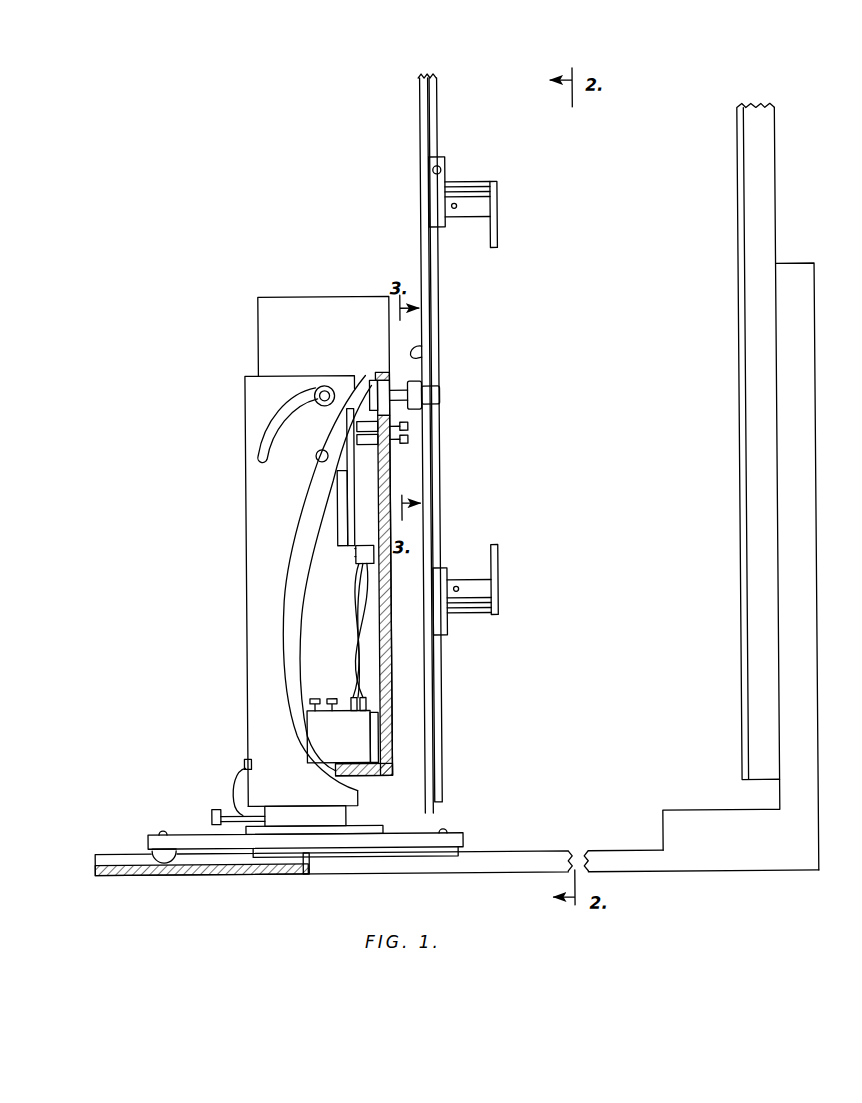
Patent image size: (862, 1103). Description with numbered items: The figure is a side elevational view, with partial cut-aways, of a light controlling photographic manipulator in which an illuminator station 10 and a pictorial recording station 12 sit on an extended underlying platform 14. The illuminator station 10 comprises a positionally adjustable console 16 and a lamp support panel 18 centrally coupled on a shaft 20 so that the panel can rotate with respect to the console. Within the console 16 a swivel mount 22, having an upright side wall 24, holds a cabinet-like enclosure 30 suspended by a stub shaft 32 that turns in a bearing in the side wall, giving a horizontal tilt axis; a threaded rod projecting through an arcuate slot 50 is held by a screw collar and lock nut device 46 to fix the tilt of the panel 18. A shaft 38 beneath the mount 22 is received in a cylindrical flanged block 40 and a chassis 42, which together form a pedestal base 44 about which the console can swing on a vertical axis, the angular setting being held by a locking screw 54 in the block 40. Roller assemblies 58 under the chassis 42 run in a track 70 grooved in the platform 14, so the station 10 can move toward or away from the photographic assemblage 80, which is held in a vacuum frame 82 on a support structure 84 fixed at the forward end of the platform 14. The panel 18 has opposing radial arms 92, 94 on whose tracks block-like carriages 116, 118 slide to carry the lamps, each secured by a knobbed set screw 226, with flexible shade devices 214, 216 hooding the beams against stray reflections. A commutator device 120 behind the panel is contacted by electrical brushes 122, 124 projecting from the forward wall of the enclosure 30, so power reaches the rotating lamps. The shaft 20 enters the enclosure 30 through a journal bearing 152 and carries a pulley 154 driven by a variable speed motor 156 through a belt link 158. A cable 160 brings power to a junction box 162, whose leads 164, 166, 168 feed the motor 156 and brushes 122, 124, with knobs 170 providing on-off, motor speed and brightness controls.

The illuminator station 10 is at (320, 208).
The pictorial recording station 12 is at (726, 376).
The platform 14 is at (547, 853).
The console 16 is at (243, 444).
The lamp support panel 18 is at (458, 300).
The shaft 20 is at (442, 400).
The swivel mount 22 is at (255, 482).
The side wall 24 is at (250, 522).
The enclosure 30 is at (259, 312).
The stub shaft 32 is at (316, 460).
The shaft 38 is at (300, 866).
The cylindrical flanged block 40 is at (345, 814).
The chassis 42 is at (188, 833).
The pedestal base 44 is at (140, 832).
The screw collar and lock nut device 46 is at (315, 394).
The arcuate slot 50 is at (279, 416).
The locking screw 54 is at (212, 808).
The roller assembly 58 is at (166, 868).
The track 70 is at (220, 870).
The photographic assemblage 80 is at (739, 154).
The vacuum frame 82 is at (777, 154).
The support structure 84 is at (812, 285).
The radial arm 92 is at (420, 91).
The radial arm 94 is at (440, 758).
The carriage 116 is at (440, 226).
The carriage 118 is at (441, 572).
The commutator device 120 is at (420, 352).
The electrical brush 122 is at (408, 430).
The electrical brush 124 is at (405, 442).
The journal bearing 152 is at (375, 372).
The pulley 154 is at (368, 400).
The variable speed motor 156 is at (357, 560).
The belt link 158 is at (338, 500).
The cable 160 is at (242, 763).
The junction box 162 is at (352, 734).
The lead 164 is at (355, 590).
The lead 166 is at (358, 612).
The lead 168 is at (355, 640).
The knobs 170 is at (330, 696).
The flexible shade device 214 is at (466, 183).
The flexible shade device 216 is at (460, 616).
The knobbed set screw 226 is at (434, 170).